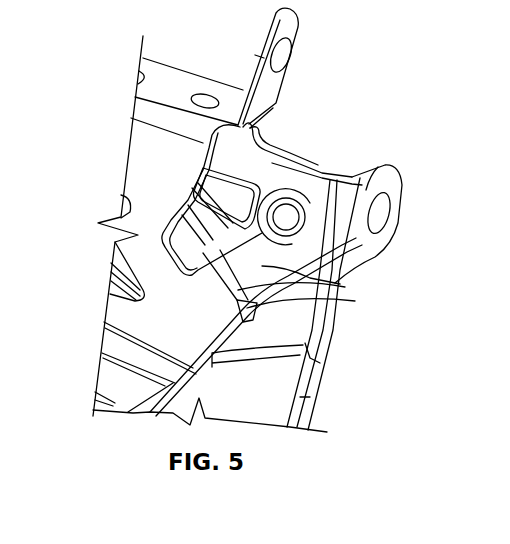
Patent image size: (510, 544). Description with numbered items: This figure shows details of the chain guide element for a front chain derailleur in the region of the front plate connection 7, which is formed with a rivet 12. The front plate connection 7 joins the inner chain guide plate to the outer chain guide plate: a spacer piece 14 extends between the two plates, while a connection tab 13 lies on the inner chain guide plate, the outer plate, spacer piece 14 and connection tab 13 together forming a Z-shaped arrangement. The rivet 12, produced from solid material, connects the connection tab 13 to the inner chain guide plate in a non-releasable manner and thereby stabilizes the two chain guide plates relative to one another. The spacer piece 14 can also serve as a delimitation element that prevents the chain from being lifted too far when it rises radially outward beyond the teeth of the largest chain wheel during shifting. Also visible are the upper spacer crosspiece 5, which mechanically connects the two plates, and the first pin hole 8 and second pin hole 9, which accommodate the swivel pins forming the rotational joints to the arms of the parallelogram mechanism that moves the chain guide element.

The upper spacer crosspiece 5 is at (173, 78).
The front plate connection 7 is at (397, 278).
The first pin hole 8 is at (282, 58).
The second pin hole 9 is at (382, 214).
The rivet 12 is at (268, 195).
The connection tab 13 is at (338, 289).
The spacer piece 14 is at (330, 308).